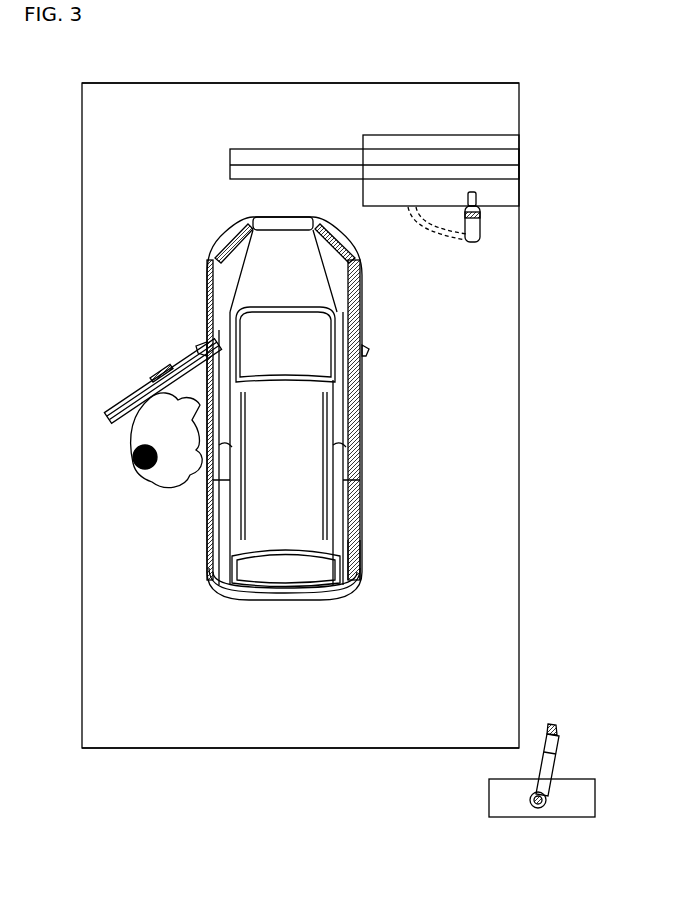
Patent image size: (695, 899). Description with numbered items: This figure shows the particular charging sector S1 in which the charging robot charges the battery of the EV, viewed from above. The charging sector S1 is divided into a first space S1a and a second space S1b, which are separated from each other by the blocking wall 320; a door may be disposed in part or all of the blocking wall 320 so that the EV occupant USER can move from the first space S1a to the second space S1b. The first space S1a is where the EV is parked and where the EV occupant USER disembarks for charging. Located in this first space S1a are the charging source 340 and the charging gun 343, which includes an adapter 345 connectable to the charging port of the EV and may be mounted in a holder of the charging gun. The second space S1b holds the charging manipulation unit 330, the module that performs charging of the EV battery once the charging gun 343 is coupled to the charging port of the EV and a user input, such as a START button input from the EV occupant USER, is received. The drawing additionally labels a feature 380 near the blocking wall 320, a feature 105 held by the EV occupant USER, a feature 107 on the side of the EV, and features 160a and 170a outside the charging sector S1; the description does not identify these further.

The charging sector S1 is at (62, 459).
The first space S1a is at (250, 702).
The second space S1b is at (108, 113).
The blocking wall 320 is at (374, 114).
The guide rail 380 is at (327, 152).
The charging manipulation unit 330 is at (481, 148).
The charging source 340 is at (478, 195).
The adapter 345 is at (482, 206).
The charging gun 343 is at (485, 212).
The element EV is at (292, 568).
The vehicle door 107 is at (362, 547).
The key rod 105 is at (136, 386).
The EV occupant USER is at (162, 490).
The charger base 160a is at (581, 805).
The charging connector 170a is at (560, 731).